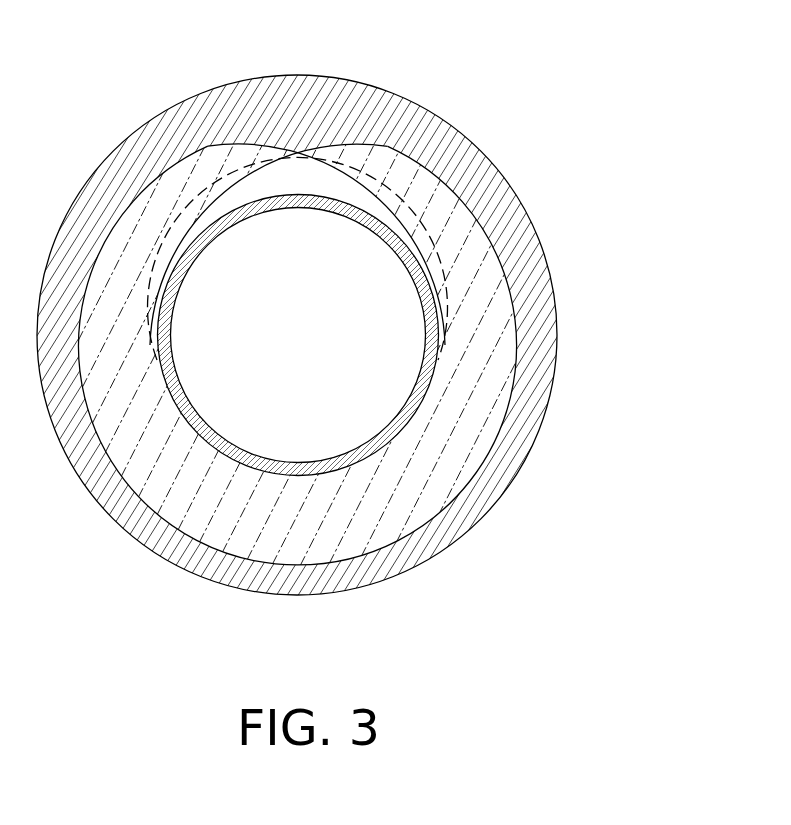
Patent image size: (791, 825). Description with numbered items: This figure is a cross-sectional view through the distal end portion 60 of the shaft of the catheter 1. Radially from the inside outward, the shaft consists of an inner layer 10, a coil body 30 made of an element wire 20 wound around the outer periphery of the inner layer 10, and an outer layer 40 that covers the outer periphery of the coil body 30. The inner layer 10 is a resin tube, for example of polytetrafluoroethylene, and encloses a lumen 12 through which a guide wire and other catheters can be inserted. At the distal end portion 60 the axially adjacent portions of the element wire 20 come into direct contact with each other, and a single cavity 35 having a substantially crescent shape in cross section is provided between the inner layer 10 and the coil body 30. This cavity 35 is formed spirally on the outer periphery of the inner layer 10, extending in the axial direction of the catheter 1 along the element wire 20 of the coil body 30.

The catheter 1 is at (360, 299).
The inner layer 10 is at (218, 442).
The lumen 12 is at (352, 383).
The element wire 20 is at (483, 385).
The coil body 30 is at (297, 258).
The cavity 35 is at (249, 162).
The outer layer 40 is at (482, 190).
The distal end portion 60 is at (118, 146).